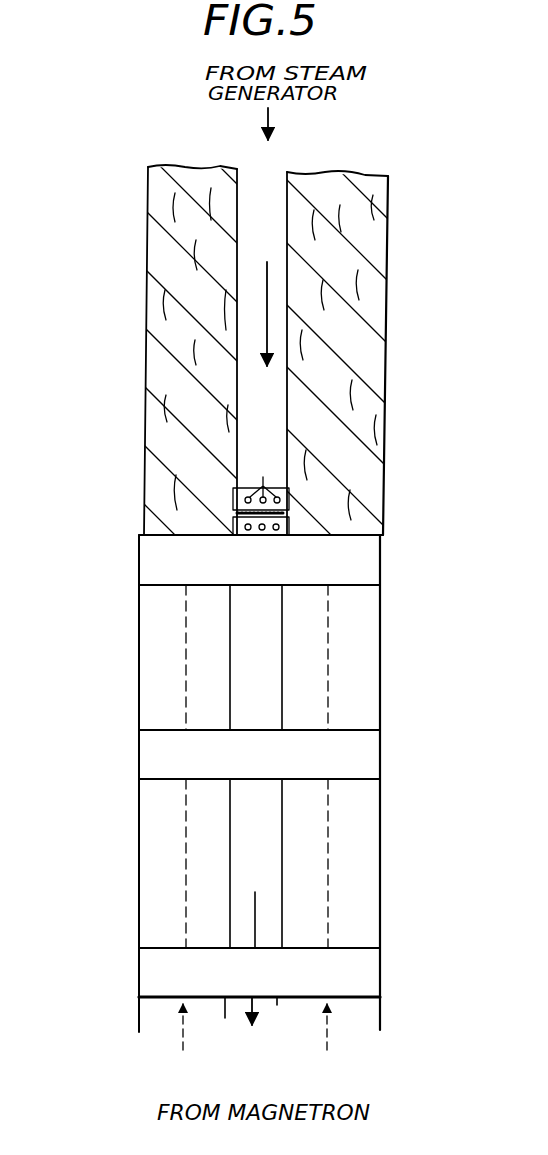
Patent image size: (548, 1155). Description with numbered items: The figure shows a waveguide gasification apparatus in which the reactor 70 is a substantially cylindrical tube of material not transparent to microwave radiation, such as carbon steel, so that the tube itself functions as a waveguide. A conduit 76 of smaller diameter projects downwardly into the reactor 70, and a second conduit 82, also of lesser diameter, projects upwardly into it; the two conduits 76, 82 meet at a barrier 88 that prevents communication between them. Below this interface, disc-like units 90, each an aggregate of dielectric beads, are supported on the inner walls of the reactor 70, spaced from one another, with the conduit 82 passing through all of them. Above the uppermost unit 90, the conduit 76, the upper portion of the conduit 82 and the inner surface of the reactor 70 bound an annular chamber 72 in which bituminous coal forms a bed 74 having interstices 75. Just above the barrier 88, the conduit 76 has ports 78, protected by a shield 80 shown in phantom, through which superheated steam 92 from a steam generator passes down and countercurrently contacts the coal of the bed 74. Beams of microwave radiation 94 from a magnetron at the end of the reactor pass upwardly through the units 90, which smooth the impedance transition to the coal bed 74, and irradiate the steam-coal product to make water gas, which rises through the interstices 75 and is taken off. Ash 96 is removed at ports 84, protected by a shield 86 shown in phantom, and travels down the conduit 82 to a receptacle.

The reactor 70 is at (148, 255).
The annular chamber 72 is at (196, 165).
The bed 74 is at (357, 221).
The interstices 75 is at (170, 420).
The conduit 76 is at (288, 173).
The ports 78 is at (263, 477).
The shield 80 is at (233, 501).
The conduit 82 is at (277, 1003).
The ports 84 is at (248, 530).
The shield 86 is at (290, 528).
The barrier 88 is at (289, 511).
The units 90 is at (152, 562).
The superheated steam 92 is at (267, 262).
The beams of microwave radiation 94 is at (185, 843).
The ash 96 is at (255, 892).